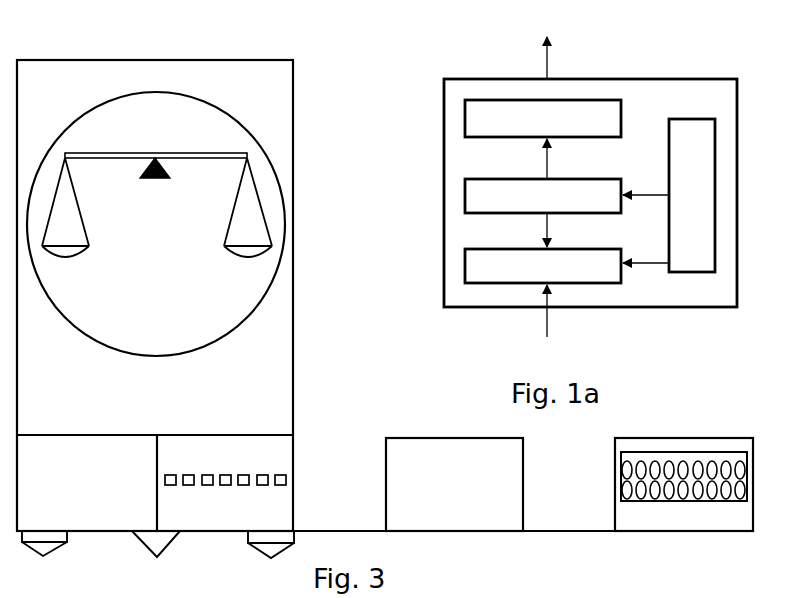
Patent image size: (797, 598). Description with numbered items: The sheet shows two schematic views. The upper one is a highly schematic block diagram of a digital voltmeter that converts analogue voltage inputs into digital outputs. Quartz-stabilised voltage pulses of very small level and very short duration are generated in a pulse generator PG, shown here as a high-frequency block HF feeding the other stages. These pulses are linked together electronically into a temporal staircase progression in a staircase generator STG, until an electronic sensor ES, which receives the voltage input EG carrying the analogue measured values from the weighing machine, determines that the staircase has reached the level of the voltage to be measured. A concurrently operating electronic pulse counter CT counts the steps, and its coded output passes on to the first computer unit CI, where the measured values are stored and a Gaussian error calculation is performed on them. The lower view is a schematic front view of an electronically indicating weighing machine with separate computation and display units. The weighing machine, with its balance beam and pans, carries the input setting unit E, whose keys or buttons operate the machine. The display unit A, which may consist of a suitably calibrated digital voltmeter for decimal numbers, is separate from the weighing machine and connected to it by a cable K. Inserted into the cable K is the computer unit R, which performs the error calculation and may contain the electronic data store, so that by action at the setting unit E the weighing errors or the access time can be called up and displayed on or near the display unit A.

In FIG. 1A, the electronic pulse counter CT is at (465, 119).
In FIG. 1A, the staircase generator STG is at (465, 196).
In FIG. 1A, the electronic sensor ES is at (465, 266).
In FIG. 1A, the high-frequency generator HF is at (692, 195).
In FIG. 1A, the pulse generator PG is at (715, 196).
In FIG. 1A, the first computer unit CI is at (531, 44).
In FIG. 1A, the voltage input EG is at (553, 328).
In FIG. 3, the setting unit E is at (221, 483).
In FIG. 3, the cable K is at (452, 521).
In FIG. 3, the computer unit R is at (454, 485).
In FIG. 3, the display unit A is at (684, 485).